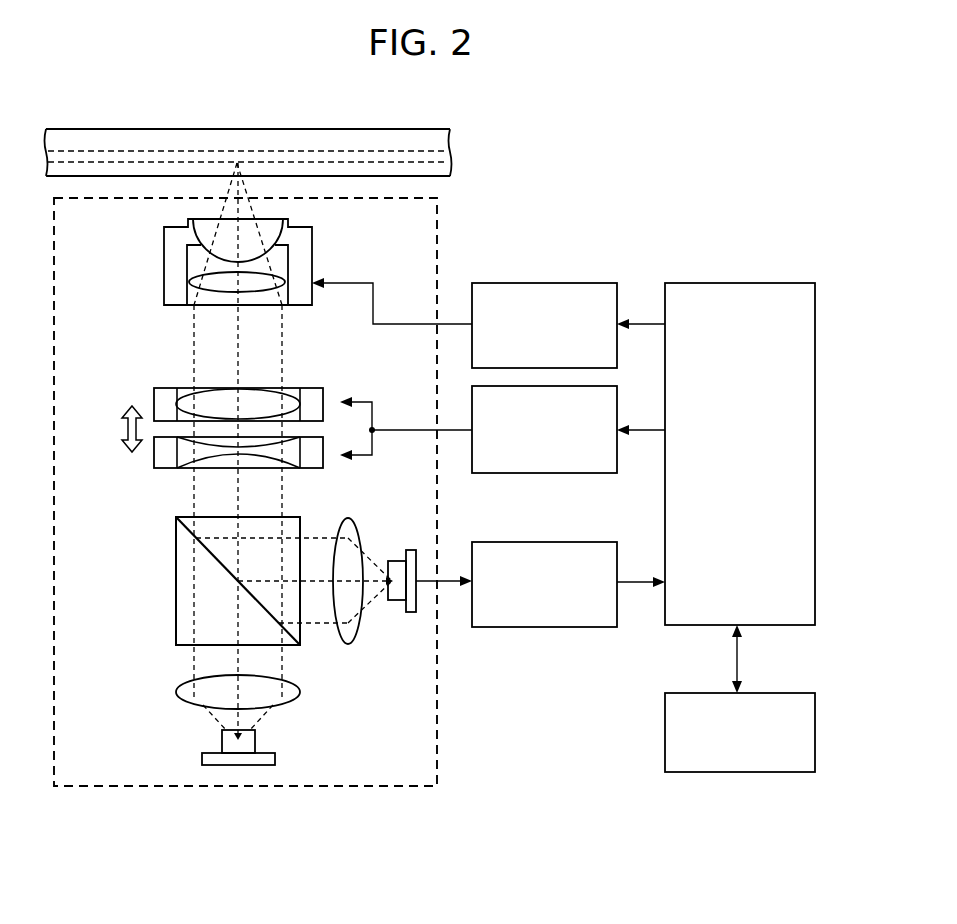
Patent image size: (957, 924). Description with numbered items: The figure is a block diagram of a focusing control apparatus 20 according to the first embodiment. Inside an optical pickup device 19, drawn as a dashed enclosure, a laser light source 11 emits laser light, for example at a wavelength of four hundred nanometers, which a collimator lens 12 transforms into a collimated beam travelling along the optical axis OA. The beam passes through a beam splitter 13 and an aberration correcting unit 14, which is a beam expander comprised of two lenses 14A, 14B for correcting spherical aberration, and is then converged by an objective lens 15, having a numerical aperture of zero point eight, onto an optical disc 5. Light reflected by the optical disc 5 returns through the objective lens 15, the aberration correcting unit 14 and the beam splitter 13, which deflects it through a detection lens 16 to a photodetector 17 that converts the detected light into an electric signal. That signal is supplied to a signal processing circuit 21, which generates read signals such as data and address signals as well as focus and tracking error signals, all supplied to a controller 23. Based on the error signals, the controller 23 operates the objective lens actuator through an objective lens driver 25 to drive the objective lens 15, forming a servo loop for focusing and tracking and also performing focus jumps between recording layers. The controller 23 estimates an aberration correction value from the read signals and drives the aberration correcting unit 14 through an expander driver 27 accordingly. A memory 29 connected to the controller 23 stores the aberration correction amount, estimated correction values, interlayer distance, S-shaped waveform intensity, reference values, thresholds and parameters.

The optical disc 5 is at (450, 134).
The focusing control apparatus 20 is at (632, 191).
The optical pickup device 19 is at (438, 208).
The optical axis OA is at (238, 362).
The objective lens 15 is at (164, 278).
The aberration correcting unit 14 is at (196, 426).
The concave lens of beam expander 14A is at (223, 474).
The convex lens of beam expander 14B is at (160, 386).
The beam splitter 13 is at (176, 565).
The detection lens 16 is at (348, 645).
The photodetector 17 is at (411, 612).
The collimator lens 12 is at (176, 693).
The laser light source 11 is at (202, 758).
The objective lens driver 25 is at (583, 283).
The expander driver 27 is at (576, 473).
The signal processing circuit 21 is at (577, 627).
The controller 23 is at (776, 283).
The memory 29 is at (783, 693).